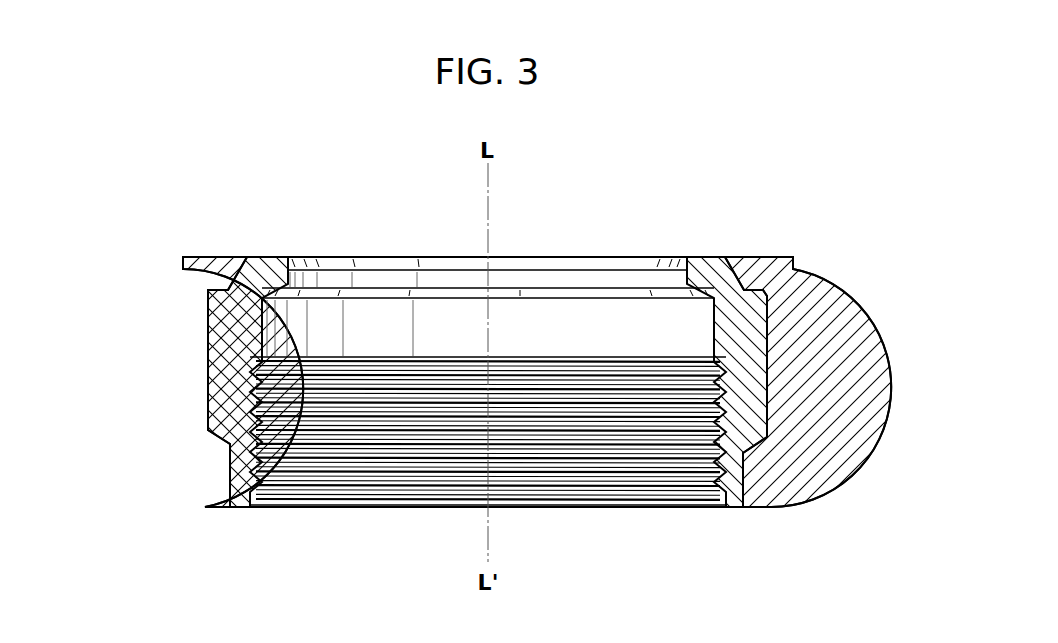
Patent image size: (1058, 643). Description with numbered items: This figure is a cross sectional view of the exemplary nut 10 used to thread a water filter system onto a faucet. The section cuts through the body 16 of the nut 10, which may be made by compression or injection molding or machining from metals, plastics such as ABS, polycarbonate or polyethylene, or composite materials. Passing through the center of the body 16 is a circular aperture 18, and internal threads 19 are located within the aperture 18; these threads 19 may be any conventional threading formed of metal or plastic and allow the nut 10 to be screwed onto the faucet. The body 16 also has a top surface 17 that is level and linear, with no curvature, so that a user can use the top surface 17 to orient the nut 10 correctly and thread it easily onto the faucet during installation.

The nut 10 is at (600, 194).
The body 16 is at (833, 284).
The top surface 17 is at (757, 257).
The circular aperture 18 is at (605, 507).
The internal threads 19 is at (693, 495).